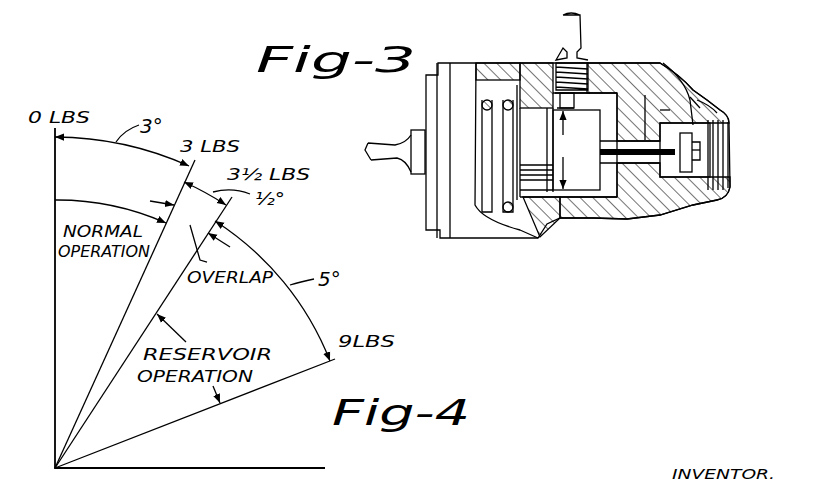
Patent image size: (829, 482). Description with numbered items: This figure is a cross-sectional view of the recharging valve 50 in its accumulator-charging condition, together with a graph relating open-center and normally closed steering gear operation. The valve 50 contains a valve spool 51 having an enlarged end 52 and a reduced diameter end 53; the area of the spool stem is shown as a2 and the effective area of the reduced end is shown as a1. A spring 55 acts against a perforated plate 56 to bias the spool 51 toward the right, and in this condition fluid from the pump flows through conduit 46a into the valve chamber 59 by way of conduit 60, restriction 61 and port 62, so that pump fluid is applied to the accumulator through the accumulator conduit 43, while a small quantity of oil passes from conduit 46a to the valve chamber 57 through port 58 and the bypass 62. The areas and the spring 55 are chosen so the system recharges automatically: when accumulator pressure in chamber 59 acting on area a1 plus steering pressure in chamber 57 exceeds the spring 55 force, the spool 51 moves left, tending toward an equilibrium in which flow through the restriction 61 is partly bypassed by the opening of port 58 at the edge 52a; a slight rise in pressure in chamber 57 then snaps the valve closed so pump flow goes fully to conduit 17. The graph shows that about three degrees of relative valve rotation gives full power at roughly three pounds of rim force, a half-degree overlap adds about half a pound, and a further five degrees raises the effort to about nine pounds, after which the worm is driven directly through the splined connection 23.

The conduit 17 is at (641, 180).
The splined connection 23 is at (565, 150).
The valve body 43 is at (720, 110).
The conduit 46a is at (578, 27).
The valve 50 is at (522, 244).
The valve spool 51 is at (640, 207).
The enlarged end 52 is at (580, 200).
The edge 52a is at (657, 100).
The reduced diameter end 53 is at (717, 193).
The spring 55 is at (488, 209).
The perforated plate 56 is at (517, 90).
The valve chamber 57 is at (645, 216).
The port 58 is at (557, 78).
The valve chamber 59 is at (700, 125).
The conduit 60 is at (641, 84).
The restriction 61 is at (673, 90).
The port 62 is at (627, 59).
The effective area of the reduced diameter end a1 is at (703, 153).
The area of the stem of the spool a2 is at (672, 103).